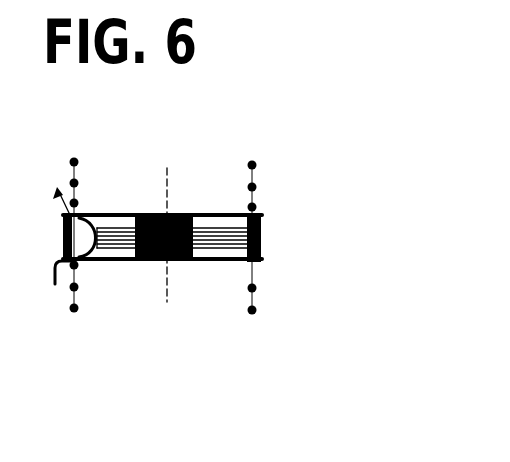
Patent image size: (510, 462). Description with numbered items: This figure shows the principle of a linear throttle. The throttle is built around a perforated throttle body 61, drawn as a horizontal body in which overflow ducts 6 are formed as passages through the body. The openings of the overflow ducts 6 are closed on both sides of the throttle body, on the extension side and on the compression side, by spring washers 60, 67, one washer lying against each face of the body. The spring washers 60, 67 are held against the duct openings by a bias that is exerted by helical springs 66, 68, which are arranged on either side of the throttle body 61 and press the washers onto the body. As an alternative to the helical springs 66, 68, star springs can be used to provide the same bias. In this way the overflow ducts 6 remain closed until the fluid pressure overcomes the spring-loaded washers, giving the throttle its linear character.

The overflow ducts 6 is at (103, 213).
The spring washer 60 is at (238, 215).
The throttle body 61 is at (268, 242).
The helical spring 66 is at (255, 162).
The spring washer 67 is at (110, 243).
The helical spring 68 is at (256, 290).